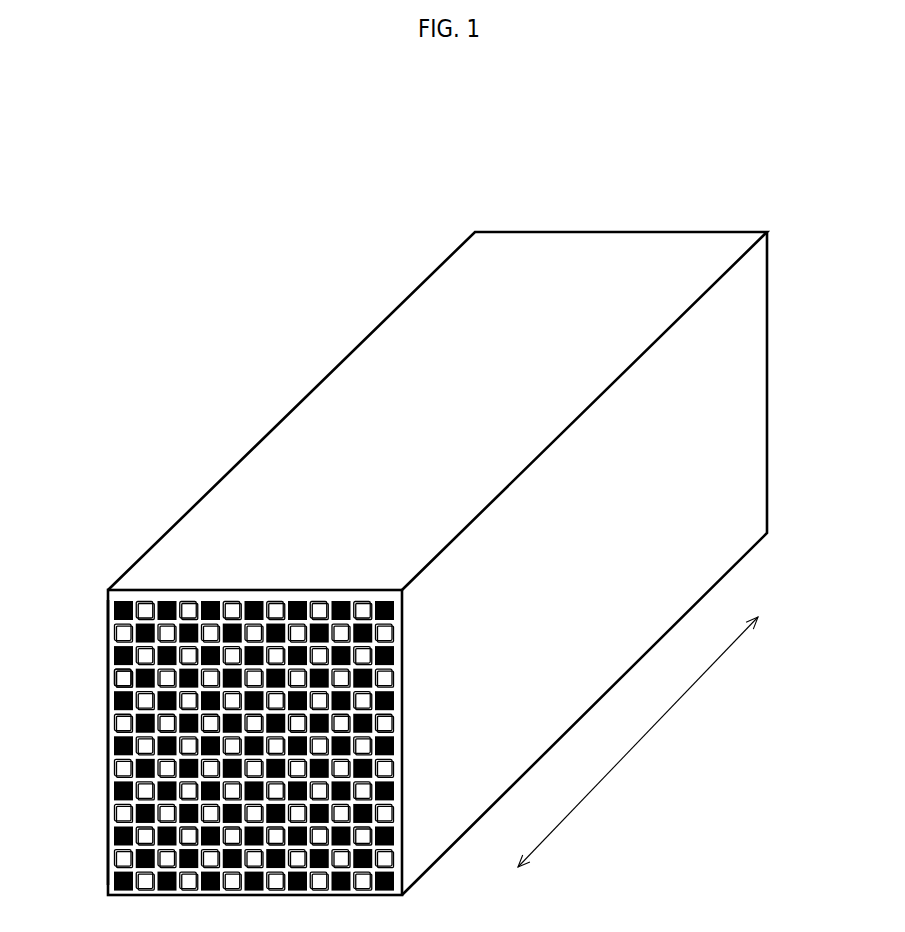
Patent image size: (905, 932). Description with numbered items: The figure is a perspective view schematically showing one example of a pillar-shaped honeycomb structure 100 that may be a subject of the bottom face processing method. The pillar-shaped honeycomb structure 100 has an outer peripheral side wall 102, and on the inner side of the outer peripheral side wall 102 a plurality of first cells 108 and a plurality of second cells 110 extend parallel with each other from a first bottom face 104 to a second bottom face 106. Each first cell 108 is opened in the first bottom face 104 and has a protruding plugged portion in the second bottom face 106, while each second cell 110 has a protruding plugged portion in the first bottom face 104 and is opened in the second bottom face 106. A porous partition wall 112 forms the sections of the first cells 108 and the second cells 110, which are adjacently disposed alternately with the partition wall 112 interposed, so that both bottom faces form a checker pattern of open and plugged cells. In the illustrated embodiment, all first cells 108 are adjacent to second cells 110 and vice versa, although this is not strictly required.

The pillar-shaped honeycomb structure 100 is at (501, 192).
The outer peripheral side wall 102 is at (742, 478).
The first bottom face 104 is at (108, 846).
The second bottom face 106 is at (606, 231).
The first cells 108 is at (118, 744).
The second cells 110 is at (117, 677).
The partition wall 112 is at (108, 621).